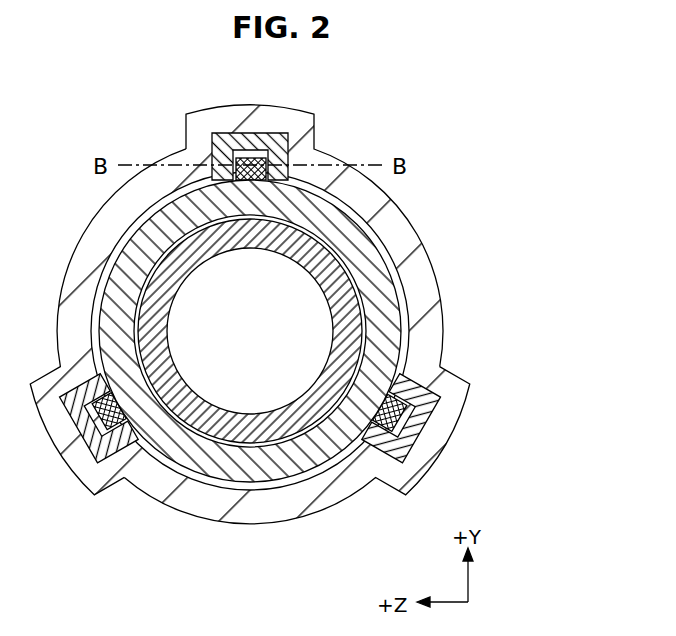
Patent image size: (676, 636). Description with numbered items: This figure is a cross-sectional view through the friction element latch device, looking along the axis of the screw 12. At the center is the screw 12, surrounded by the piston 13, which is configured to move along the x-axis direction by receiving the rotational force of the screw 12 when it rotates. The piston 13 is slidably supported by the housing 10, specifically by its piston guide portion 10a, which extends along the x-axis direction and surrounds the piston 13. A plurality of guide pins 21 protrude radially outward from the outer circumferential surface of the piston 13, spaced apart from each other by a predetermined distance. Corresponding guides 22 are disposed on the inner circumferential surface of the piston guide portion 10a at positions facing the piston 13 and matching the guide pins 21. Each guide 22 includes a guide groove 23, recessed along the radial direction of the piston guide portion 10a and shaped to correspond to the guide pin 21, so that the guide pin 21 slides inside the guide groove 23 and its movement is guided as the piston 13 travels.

The housing 10 is at (338, 318).
The piston guide portion 10a is at (428, 289).
The screw 12 is at (345, 288).
The piston 13 is at (358, 246).
The guide pin 21 is at (441, 410).
The guide 22 is at (431, 393).
The guide groove 23 is at (405, 424).